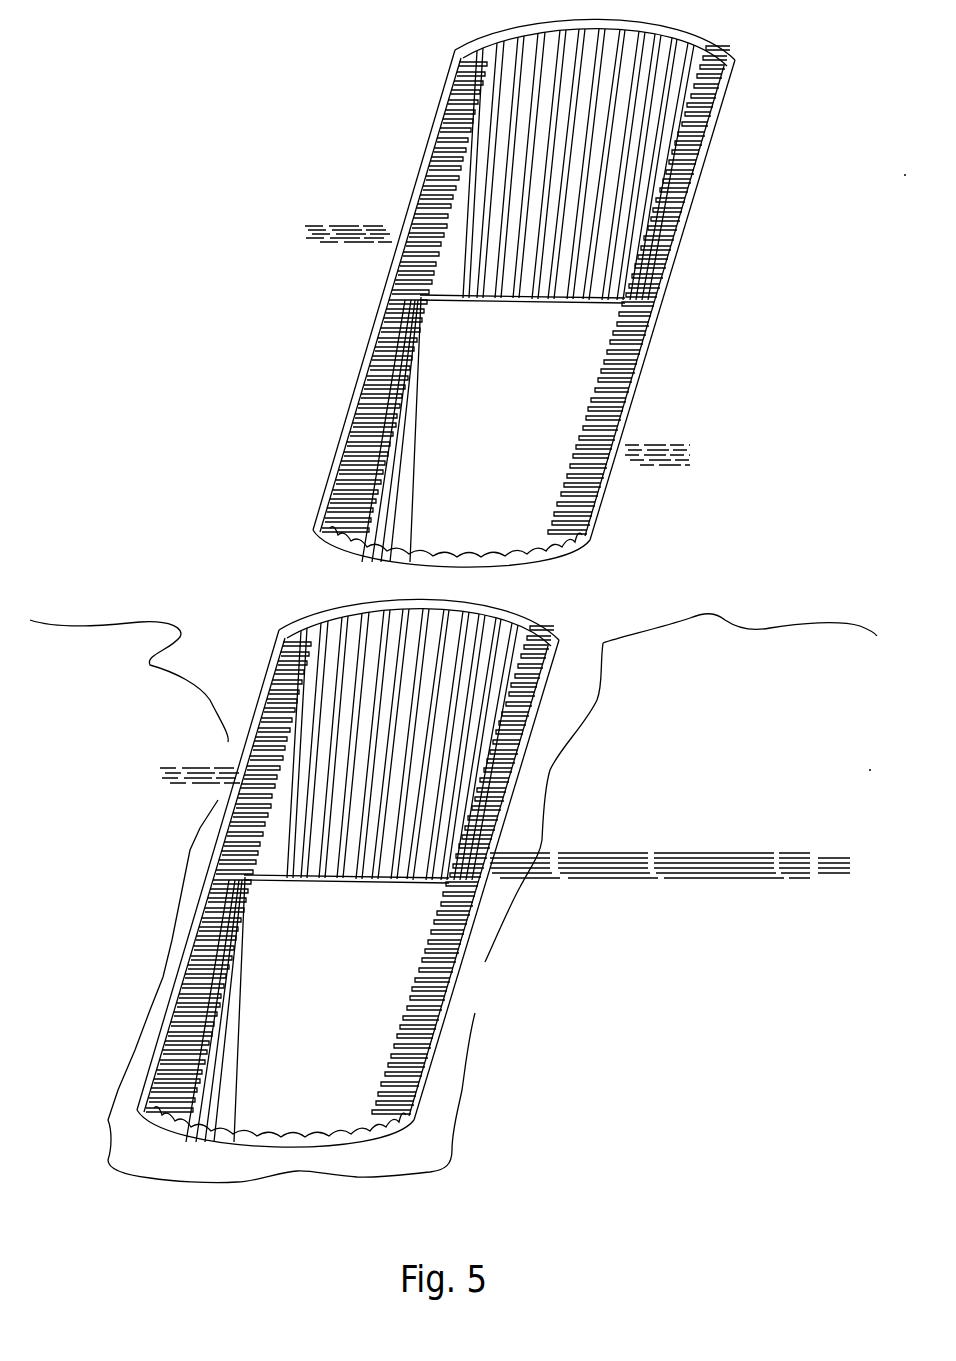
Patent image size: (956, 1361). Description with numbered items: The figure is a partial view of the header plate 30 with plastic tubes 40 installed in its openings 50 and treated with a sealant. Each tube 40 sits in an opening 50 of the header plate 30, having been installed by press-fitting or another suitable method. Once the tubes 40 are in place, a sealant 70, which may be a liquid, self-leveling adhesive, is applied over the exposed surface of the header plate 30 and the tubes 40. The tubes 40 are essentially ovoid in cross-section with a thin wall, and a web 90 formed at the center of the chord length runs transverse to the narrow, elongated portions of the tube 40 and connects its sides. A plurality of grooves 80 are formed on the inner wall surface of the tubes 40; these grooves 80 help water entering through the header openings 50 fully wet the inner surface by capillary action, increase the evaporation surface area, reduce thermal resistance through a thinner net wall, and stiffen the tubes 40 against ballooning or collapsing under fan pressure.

The header plate 30 is at (272, 138).
The plastic tube 40 is at (450, 998).
The opening 50 is at (472, 498).
The sealant 70 is at (440, 1118).
The groove 80 is at (320, 1143).
The web 90 is at (286, 868).